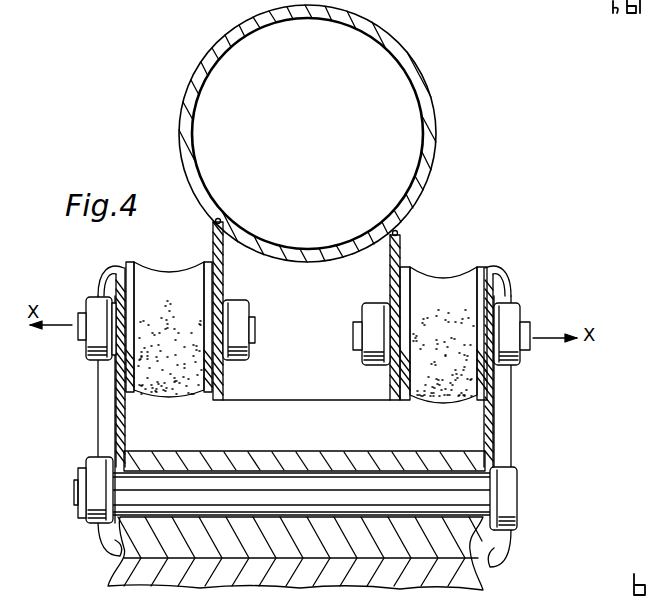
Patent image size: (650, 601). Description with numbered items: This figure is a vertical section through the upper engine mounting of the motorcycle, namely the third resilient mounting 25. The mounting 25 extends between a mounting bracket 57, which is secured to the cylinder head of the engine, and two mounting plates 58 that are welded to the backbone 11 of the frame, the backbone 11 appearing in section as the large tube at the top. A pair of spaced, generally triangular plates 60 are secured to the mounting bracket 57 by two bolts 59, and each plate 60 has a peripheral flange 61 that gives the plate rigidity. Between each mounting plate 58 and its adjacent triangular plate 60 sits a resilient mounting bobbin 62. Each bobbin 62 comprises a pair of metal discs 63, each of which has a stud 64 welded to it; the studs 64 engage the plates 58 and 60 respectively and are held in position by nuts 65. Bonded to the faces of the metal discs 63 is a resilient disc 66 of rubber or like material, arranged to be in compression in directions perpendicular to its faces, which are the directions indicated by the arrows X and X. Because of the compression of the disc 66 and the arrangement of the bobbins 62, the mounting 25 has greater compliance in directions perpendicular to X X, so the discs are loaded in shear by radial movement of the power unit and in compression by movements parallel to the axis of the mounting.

The backbone 11 is at (424, 103).
The third resilient mounting 25 is at (421, 420).
The mounting bracket 57 is at (362, 460).
The mounting plates 58 is at (213, 241).
The bolts 59 is at (500, 495).
The triangular plates 60 is at (488, 413).
The peripheral flange 61 is at (500, 382).
The resilient mounting bobbin 62 is at (448, 318).
The metal discs 63 is at (483, 266).
The stud 64 is at (353, 334).
The nuts 65 is at (372, 302).
The resilient disc 66 is at (441, 372).